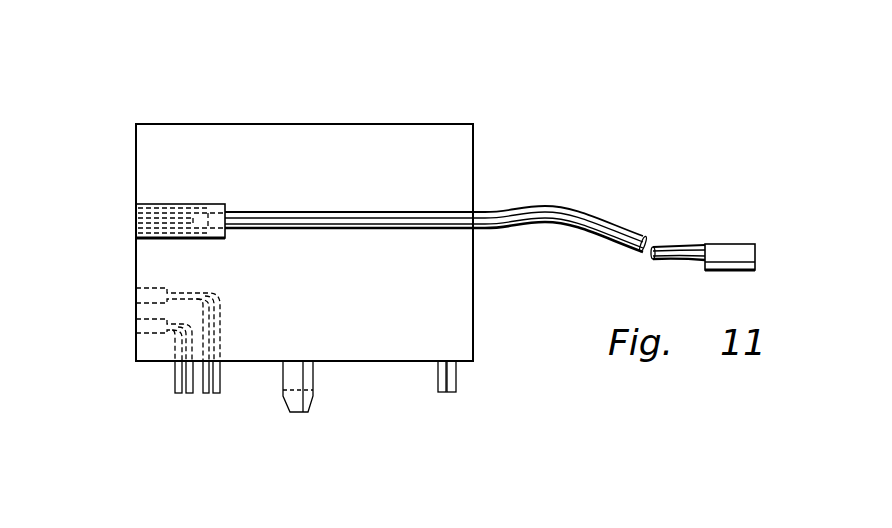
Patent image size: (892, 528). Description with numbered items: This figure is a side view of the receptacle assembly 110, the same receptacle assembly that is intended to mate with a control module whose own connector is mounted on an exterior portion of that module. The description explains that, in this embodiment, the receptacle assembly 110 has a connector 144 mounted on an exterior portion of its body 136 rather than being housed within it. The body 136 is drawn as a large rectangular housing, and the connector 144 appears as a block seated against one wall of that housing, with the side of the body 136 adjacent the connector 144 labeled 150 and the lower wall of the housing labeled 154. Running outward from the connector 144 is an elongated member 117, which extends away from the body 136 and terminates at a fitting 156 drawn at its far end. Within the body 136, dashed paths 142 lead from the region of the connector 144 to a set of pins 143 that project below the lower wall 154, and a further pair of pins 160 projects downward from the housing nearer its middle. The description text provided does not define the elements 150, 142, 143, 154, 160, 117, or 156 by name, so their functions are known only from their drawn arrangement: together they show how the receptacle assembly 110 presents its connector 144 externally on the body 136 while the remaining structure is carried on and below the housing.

The receptacle assembly 110 is at (188, 93).
The body 136 is at (369, 115).
The housing side wall 150 is at (136, 145).
The connector 144 is at (167, 204).
The conductive traces 142 is at (152, 288).
The connector pins 143 is at (205, 394).
The housing bottom wall 154 is at (170, 362).
The mounting pins 160 is at (438, 381).
The cable 117 is at (576, 212).
The cable connector 156 is at (733, 244).